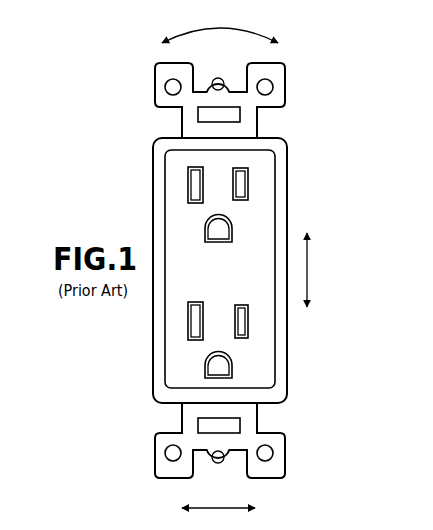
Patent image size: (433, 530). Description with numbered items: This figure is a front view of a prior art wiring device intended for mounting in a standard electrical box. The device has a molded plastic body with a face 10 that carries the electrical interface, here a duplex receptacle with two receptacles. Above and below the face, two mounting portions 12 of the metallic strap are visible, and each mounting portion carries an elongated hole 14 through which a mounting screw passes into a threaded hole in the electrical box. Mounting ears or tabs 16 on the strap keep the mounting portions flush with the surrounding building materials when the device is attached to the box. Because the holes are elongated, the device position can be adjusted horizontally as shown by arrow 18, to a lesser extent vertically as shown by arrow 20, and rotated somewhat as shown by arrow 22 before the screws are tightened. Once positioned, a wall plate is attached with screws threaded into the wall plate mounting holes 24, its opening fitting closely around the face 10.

The face 10 is at (262, 187).
The mounting portion 12 is at (223, 276).
The elongated hole 14 is at (210, 108).
The mounting ear 16 is at (273, 72).
The arrow 18 is at (210, 510).
The arrow 20 is at (308, 268).
The arrow 22 is at (225, 27).
The wall plate mounting hole 24 is at (218, 80).